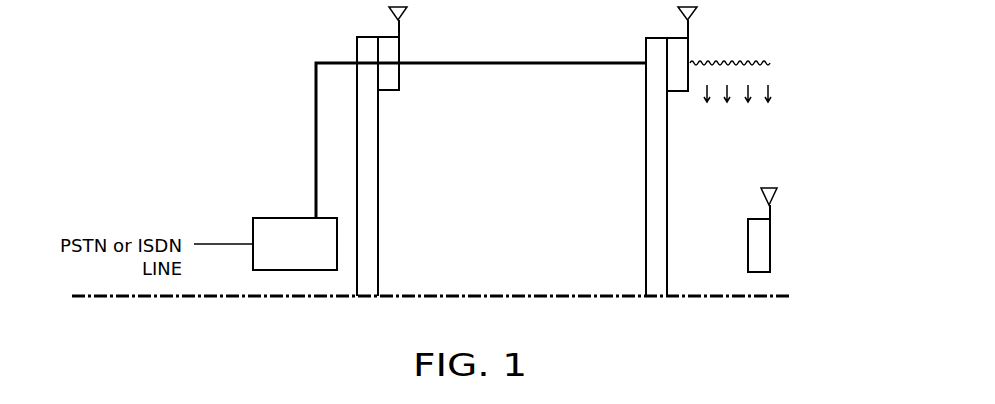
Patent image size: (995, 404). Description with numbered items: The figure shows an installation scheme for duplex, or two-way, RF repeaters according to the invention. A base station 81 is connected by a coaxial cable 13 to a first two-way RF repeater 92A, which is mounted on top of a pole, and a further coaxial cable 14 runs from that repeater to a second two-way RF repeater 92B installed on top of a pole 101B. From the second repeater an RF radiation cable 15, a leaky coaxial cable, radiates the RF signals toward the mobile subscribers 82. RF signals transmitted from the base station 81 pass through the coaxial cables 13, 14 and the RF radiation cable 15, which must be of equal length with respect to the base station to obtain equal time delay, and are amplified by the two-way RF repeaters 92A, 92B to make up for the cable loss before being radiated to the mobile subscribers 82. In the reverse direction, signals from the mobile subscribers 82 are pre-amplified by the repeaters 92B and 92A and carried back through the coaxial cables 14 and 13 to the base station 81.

The coaxial cable 13 is at (315, 140).
The coaxial cable 14 is at (459, 63).
The RF radiation cable 15 is at (707, 63).
The base station 81 is at (263, 218).
The mobile subscribers 82 is at (772, 242).
The two-way RF repeater 92A is at (399, 90).
The two-way RF repeater 92B is at (668, 92).
The pole 101B is at (667, 228).